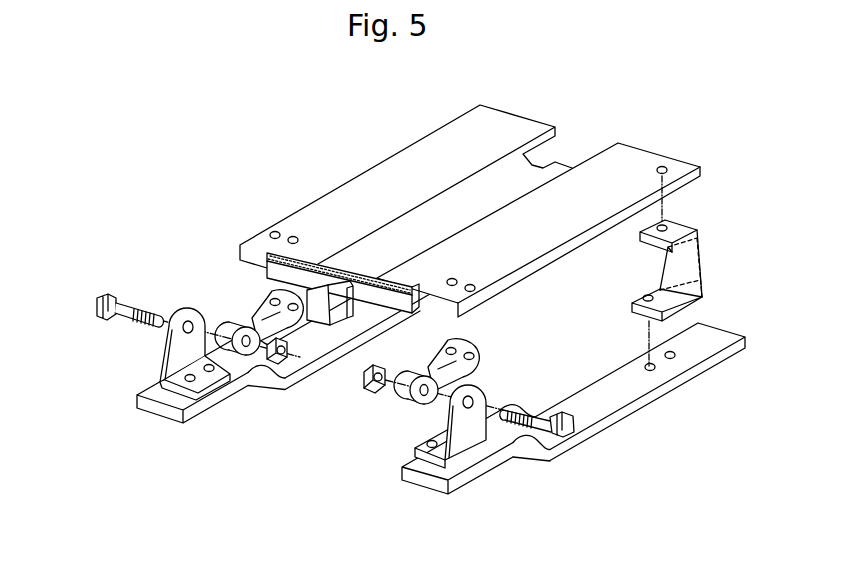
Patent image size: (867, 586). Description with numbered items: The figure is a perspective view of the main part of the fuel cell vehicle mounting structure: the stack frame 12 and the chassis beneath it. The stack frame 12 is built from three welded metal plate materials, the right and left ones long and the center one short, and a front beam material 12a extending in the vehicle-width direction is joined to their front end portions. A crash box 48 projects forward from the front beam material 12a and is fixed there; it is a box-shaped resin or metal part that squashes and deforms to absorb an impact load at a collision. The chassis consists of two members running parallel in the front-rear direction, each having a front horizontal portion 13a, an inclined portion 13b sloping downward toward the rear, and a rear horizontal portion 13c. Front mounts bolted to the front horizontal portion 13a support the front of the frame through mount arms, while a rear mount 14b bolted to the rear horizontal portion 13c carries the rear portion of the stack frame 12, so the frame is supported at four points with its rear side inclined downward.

The stack frame 12 is at (507, 119).
The front beam material 12a is at (327, 272).
The front horizontal portion 13a is at (463, 482).
The inclined portion 13b is at (550, 460).
The rear horizontal portion 13c is at (667, 387).
The rear mount 14b is at (702, 270).
The crash box 48 is at (342, 312).